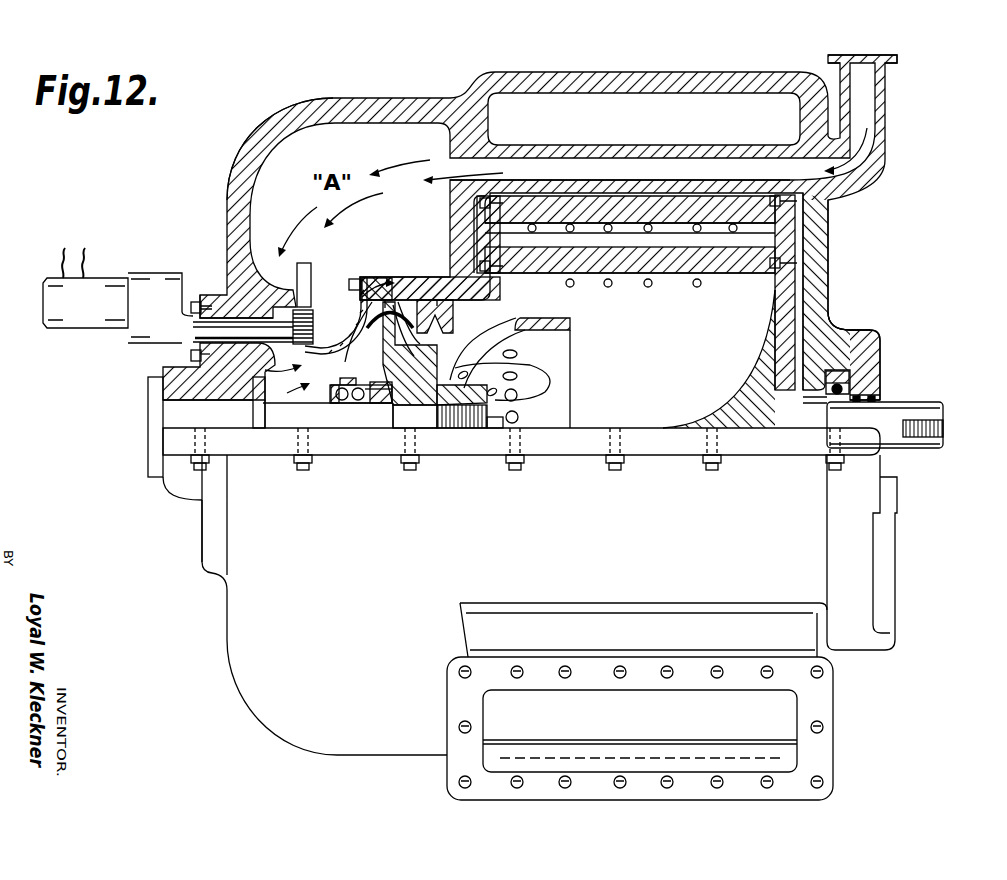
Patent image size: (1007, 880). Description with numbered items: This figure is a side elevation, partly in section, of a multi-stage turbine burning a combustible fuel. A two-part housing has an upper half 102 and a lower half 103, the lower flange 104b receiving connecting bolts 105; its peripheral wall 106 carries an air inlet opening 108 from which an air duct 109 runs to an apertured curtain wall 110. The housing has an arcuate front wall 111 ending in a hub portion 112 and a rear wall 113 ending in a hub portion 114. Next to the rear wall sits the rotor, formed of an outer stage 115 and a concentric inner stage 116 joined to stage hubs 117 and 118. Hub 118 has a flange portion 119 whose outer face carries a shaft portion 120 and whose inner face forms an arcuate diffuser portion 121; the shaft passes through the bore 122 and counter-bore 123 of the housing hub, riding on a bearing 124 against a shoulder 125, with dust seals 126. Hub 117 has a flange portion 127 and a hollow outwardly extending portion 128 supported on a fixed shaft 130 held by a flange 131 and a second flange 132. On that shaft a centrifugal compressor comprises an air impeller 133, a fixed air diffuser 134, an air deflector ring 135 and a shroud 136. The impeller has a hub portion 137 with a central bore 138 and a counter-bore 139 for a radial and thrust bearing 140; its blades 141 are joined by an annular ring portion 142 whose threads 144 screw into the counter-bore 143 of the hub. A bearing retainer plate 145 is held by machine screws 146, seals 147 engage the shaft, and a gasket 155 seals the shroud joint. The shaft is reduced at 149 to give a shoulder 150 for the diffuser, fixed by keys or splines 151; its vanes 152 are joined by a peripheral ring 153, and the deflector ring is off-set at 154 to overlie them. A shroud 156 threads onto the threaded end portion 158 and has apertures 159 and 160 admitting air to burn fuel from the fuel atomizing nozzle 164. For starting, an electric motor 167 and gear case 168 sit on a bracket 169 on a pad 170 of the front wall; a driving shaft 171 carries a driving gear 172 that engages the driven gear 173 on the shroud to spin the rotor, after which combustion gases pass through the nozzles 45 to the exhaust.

The nozzles 45 is at (697, 232).
The upper half 102 is at (364, 97).
The lower half 103 is at (530, 605).
The flange 104b is at (452, 456).
The connecting bolts 105 is at (518, 470).
The peripheral wall 106 is at (582, 72).
The air inlet opening 108 is at (877, 55).
The air duct 109 is at (527, 160).
The curtain wall 110 is at (450, 193).
The front wall 111 is at (248, 162).
The hub portion 112 is at (200, 502).
The rear wall 113 is at (828, 265).
The hub portion 114 is at (880, 356).
The outer stage 115 is at (646, 231).
The inner stage 116 is at (636, 279).
The stage hub 117 is at (476, 222).
The stage hub 118 is at (795, 243).
The flange portion 119 is at (791, 303).
The shaft portion 120 is at (941, 412).
The arcuate diffuser portion 121 is at (760, 366).
The bore 122 is at (880, 397).
The counter-bore 123 is at (840, 372).
The bearing 124 is at (868, 348).
The shoulder 125 is at (827, 397).
The dust seals 126 is at (873, 394).
The flange portion 127 is at (498, 241).
The hollow outwardly extending portion 128 is at (447, 277).
The fixed shaft 130 is at (327, 428).
The flange 131 is at (148, 463).
The second flange 132 is at (258, 405).
The air impeller 133 is at (377, 379).
The fixed air diffuser 134 is at (453, 355).
The air deflector ring 135 is at (452, 316).
The shroud 136 is at (349, 287).
The hub portion 137 is at (352, 378).
The central bore 138 is at (373, 402).
The counter-bore 139 is at (310, 378).
The radial and thrust bearing 140 is at (365, 400).
The blades 141 is at (297, 358).
The annular ring portion 142 is at (382, 305).
The counter-bore 143 is at (437, 304).
The threads 144 is at (388, 305).
The bearing retainer plate 145 is at (361, 403).
The machine screws 146 is at (331, 391).
The seals 147 is at (395, 408).
The reduced diameter 149 is at (410, 353).
The shoulder 150 is at (397, 414).
The keys or splines 151 is at (464, 380).
The vanes 152 is at (414, 348).
The peripheral ring 153 is at (370, 320).
The off-set 154 is at (449, 330).
The gasket 155 is at (382, 300).
The shroud 156 is at (570, 330).
The threaded end portion 158 is at (463, 428).
The apertures 159 is at (517, 354).
The apertures 160 is at (518, 394).
The fuel atomizing nozzle 164 is at (500, 421).
The electric motor 167 is at (85, 288).
The gear case 168 is at (160, 308).
The bracket 169 is at (198, 300).
The pad 170 is at (219, 292).
The driving shaft 171 is at (207, 330).
The driving gear 172 is at (310, 292).
The driven gear 173 is at (320, 345).